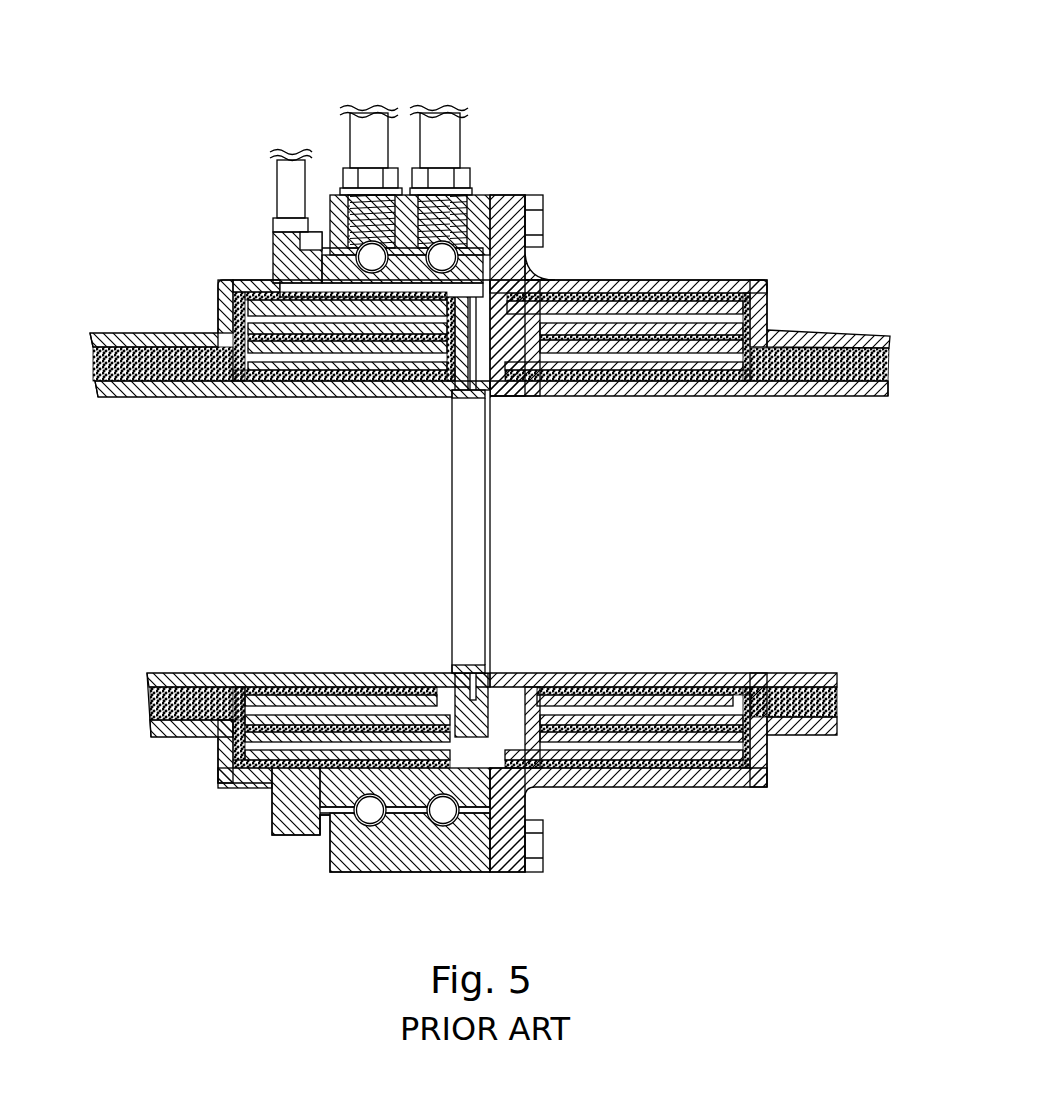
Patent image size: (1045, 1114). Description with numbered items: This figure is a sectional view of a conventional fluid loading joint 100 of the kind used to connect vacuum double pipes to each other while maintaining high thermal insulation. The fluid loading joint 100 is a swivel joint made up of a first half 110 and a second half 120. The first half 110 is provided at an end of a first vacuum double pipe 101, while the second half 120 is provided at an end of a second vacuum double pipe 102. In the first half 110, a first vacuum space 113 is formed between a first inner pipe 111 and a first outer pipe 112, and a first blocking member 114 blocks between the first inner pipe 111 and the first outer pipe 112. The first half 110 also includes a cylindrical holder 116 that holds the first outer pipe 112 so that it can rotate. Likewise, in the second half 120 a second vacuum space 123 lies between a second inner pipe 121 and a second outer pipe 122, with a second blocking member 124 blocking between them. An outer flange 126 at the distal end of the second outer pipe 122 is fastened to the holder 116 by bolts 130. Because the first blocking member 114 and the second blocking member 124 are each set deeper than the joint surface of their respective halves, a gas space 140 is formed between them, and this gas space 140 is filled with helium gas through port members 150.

The fluid loading joint 100 is at (686, 157).
The first vacuum double pipe 101 is at (138, 332).
The second vacuum double pipe 102 is at (848, 330).
The first half 110 is at (222, 280).
The first inner pipe 111 is at (210, 397).
The first outer pipe 112 is at (253, 280).
The first vacuum space 113 is at (225, 355).
The first blocking member 114 is at (328, 366).
The cylindrical holder 116 is at (322, 238).
The second half 120 is at (737, 281).
The second inner pipe 121 is at (710, 397).
The second outer pipe 122 is at (670, 281).
The second vacuum space 123 is at (752, 357).
The second blocking member 124 is at (640, 364).
The outer flange 126 is at (507, 207).
The bolts 130 is at (541, 222).
The gas space 140 is at (485, 312).
The port members 150 is at (367, 207).